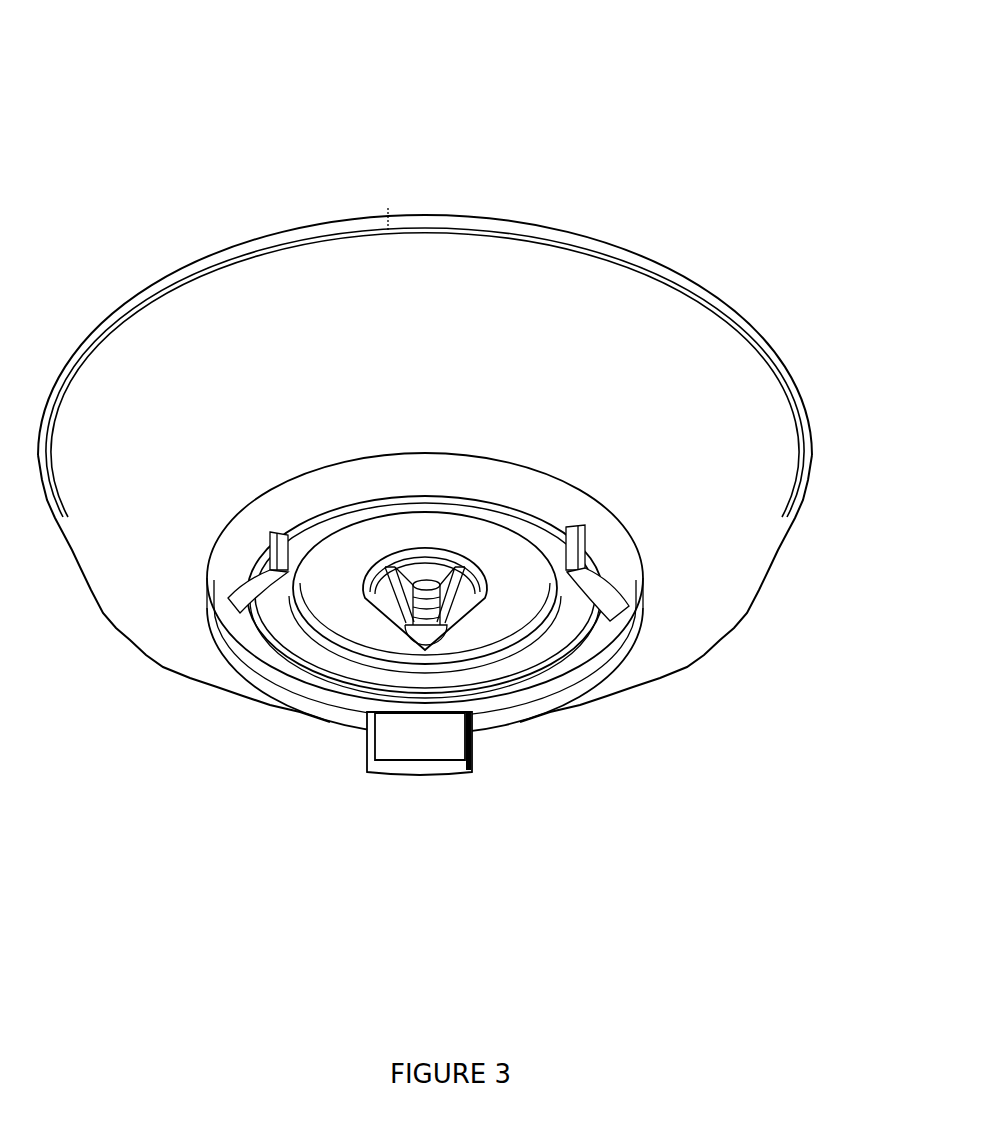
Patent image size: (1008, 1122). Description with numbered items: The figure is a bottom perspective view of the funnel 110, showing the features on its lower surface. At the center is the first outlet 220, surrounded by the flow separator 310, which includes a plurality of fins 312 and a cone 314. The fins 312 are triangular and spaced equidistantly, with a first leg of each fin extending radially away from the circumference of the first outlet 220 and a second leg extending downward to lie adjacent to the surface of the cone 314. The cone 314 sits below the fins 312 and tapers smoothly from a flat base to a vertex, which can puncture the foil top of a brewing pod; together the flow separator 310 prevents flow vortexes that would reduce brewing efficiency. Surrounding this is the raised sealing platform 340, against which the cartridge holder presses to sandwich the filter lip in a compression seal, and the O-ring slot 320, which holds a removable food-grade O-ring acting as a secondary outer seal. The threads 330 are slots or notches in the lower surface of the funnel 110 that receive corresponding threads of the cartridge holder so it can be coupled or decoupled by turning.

The funnel 110 is at (150, 93).
The first outlet 220 is at (483, 581).
The flow separator 310 is at (383, 597).
The plurality of fins 312 is at (450, 606).
The cone 314 is at (405, 645).
The O-ring slot 320 is at (556, 704).
The threads 330 is at (367, 712).
The raised sealing platform 340 is at (542, 542).